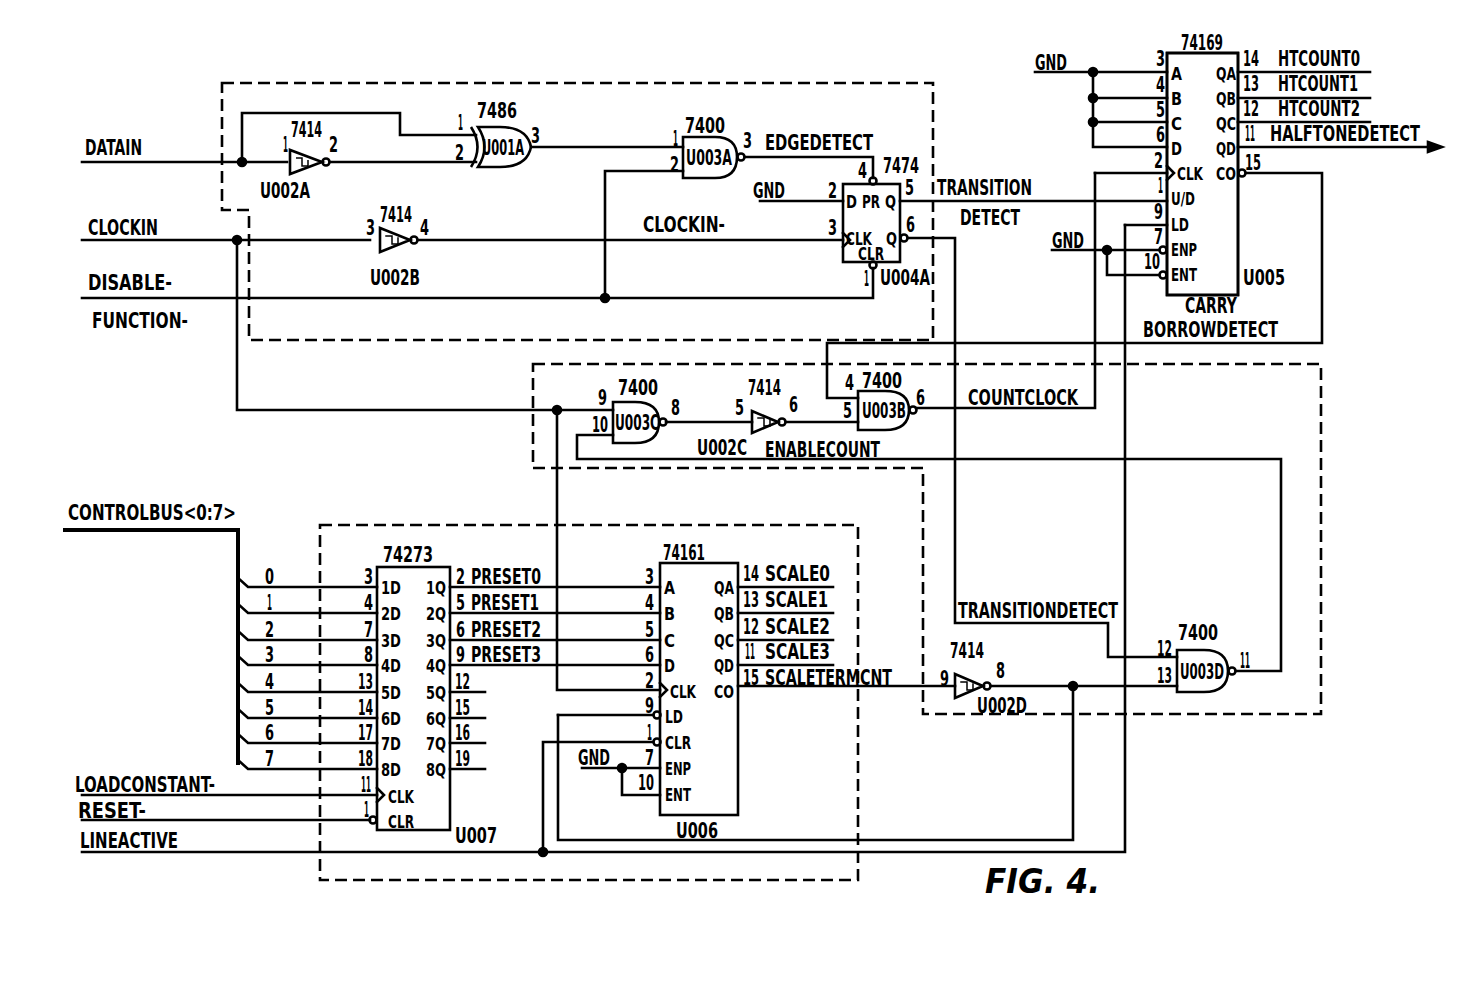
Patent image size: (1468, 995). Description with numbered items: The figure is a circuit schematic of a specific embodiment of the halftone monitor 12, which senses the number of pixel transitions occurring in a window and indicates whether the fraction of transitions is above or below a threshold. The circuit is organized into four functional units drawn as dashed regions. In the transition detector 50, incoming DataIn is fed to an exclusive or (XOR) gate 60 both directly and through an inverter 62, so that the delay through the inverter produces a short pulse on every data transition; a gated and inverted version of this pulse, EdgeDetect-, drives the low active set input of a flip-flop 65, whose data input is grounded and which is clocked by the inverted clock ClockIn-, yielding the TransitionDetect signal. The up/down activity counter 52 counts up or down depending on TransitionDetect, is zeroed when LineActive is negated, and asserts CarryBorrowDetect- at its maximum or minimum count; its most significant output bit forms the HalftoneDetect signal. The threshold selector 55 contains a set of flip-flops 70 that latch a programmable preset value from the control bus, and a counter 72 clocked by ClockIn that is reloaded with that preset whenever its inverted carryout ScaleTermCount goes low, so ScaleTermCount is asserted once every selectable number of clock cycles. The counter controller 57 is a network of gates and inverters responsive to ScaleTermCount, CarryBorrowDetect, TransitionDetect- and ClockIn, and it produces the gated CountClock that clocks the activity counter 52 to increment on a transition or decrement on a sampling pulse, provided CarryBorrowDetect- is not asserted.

The halftone monitor 12 is at (278, 873).
The transition detector 50 is at (908, 84).
The up/down activity counter 52 is at (1178, 53).
The threshold selector 55 is at (858, 878).
The counter controller 57 is at (1322, 386).
The exclusive or (XOR) gate 60 is at (519, 165).
The inverter 62 is at (309, 173).
The flip-flop 65 is at (843, 252).
The flip-flops 70 is at (450, 818).
The counter 72 is at (738, 752).